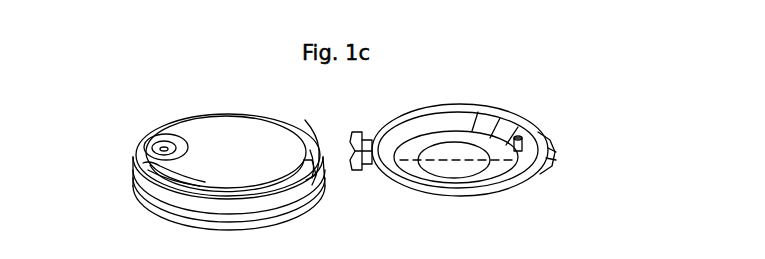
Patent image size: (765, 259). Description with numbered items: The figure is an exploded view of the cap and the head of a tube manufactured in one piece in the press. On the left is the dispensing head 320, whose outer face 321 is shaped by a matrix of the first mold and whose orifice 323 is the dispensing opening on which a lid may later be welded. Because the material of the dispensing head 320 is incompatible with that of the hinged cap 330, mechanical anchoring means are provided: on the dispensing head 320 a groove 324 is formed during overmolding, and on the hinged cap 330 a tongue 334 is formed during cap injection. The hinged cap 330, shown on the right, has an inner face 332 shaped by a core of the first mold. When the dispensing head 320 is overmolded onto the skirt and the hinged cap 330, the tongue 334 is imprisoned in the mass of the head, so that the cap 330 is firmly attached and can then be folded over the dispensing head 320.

The dispensing head 320 is at (116, 101).
The outer face of the dispensing head 321 is at (227, 137).
The orifice of the dispensing head 323 is at (163, 148).
The groove 324 is at (316, 145).
The hinged cap 330 is at (563, 86).
The inner face of the hinged cap 332 is at (440, 123).
The tongue 334 is at (355, 163).